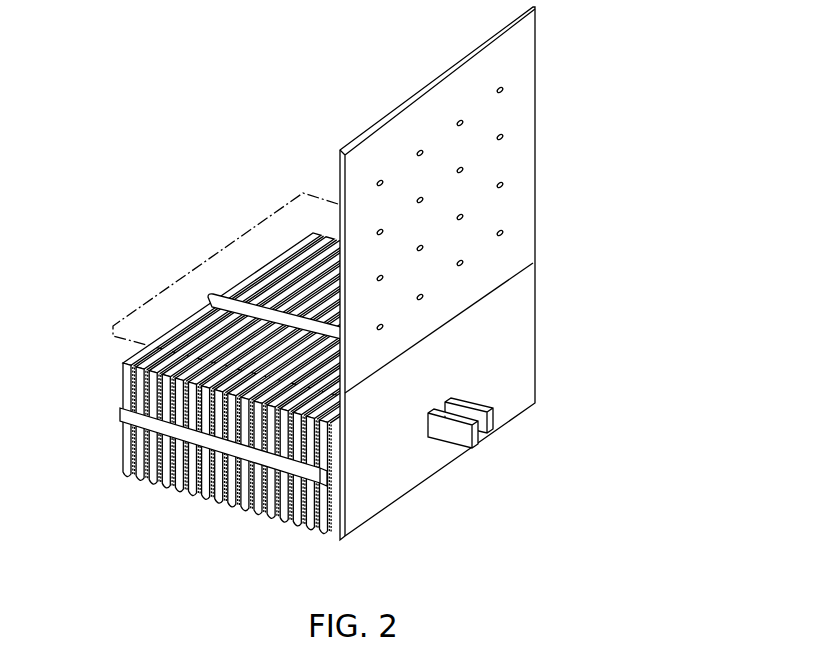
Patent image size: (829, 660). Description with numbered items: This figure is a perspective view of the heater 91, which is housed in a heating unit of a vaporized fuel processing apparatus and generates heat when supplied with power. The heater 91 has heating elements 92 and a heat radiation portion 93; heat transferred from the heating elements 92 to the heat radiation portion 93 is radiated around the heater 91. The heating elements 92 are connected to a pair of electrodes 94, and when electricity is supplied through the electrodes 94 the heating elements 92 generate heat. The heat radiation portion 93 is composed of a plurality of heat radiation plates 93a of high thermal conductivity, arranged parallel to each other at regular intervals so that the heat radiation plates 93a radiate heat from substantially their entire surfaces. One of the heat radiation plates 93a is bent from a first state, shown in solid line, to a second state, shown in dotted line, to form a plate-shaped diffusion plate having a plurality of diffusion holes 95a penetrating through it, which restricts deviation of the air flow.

The heater 91 is at (608, 211).
The heating elements 92 is at (210, 296).
The heat radiation portion 93 is at (285, 405).
The heat radiation plates 93a is at (122, 445).
The electrodes 94 is at (473, 412).
The diffusion holes 95a is at (380, 182).